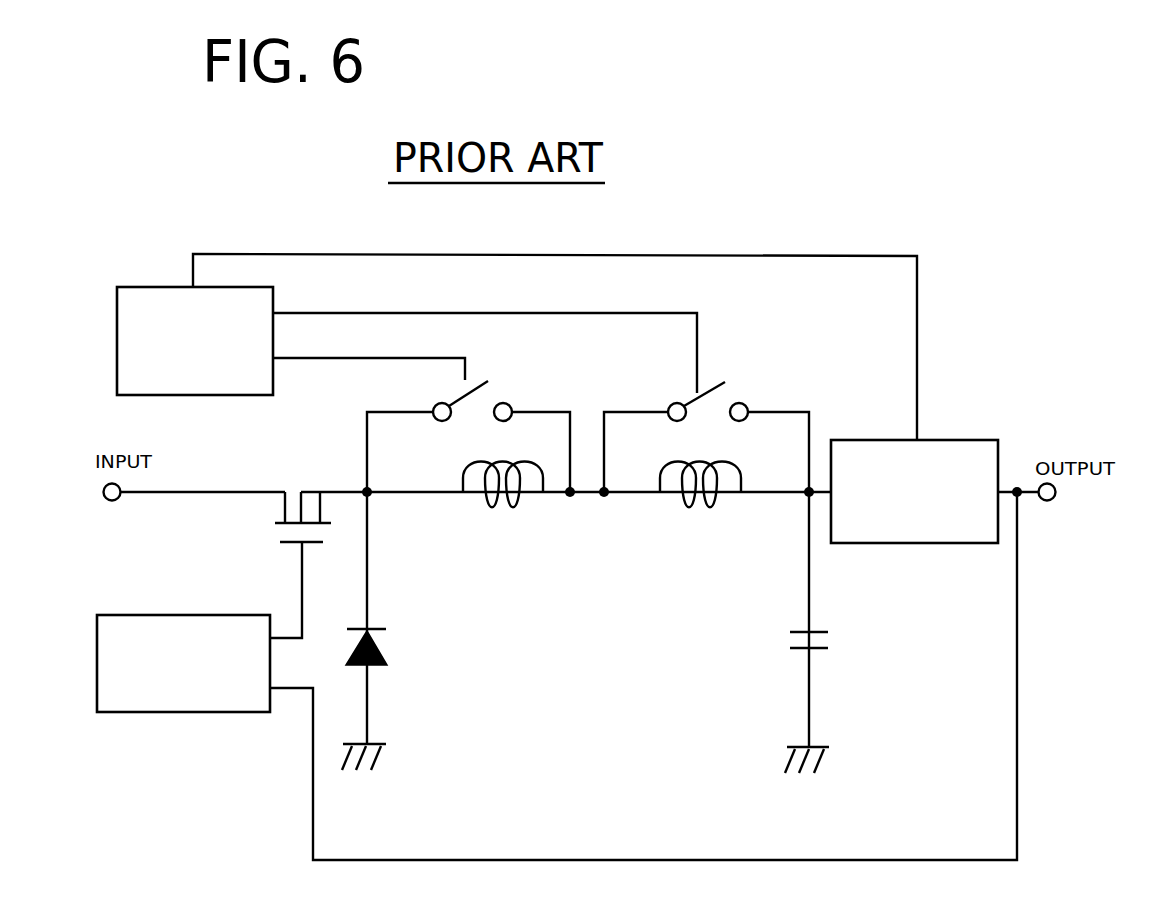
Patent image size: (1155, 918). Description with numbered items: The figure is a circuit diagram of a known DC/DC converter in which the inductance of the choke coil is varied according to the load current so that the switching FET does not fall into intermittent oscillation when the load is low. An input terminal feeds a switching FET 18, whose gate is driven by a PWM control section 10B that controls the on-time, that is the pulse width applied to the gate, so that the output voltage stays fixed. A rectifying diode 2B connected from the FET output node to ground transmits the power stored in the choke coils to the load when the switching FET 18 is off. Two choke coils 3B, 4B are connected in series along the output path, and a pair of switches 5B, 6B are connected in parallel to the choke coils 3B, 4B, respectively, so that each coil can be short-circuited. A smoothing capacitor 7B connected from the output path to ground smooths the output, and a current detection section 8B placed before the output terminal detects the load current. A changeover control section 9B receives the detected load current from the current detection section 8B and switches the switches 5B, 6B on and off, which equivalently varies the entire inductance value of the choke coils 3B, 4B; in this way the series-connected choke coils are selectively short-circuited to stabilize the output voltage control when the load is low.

The changeover control section 9B is at (163, 287).
The PWM control section 10B is at (185, 615).
The current detection section 8B is at (943, 440).
The switching transistor 18 is at (295, 487).
The switch 5B is at (497, 395).
The switch 6B is at (736, 395).
The choke coil 3B is at (481, 502).
The choke coil 4B is at (703, 508).
The rectifying diode 2B is at (379, 653).
The smoothing capacitor 7B is at (830, 641).